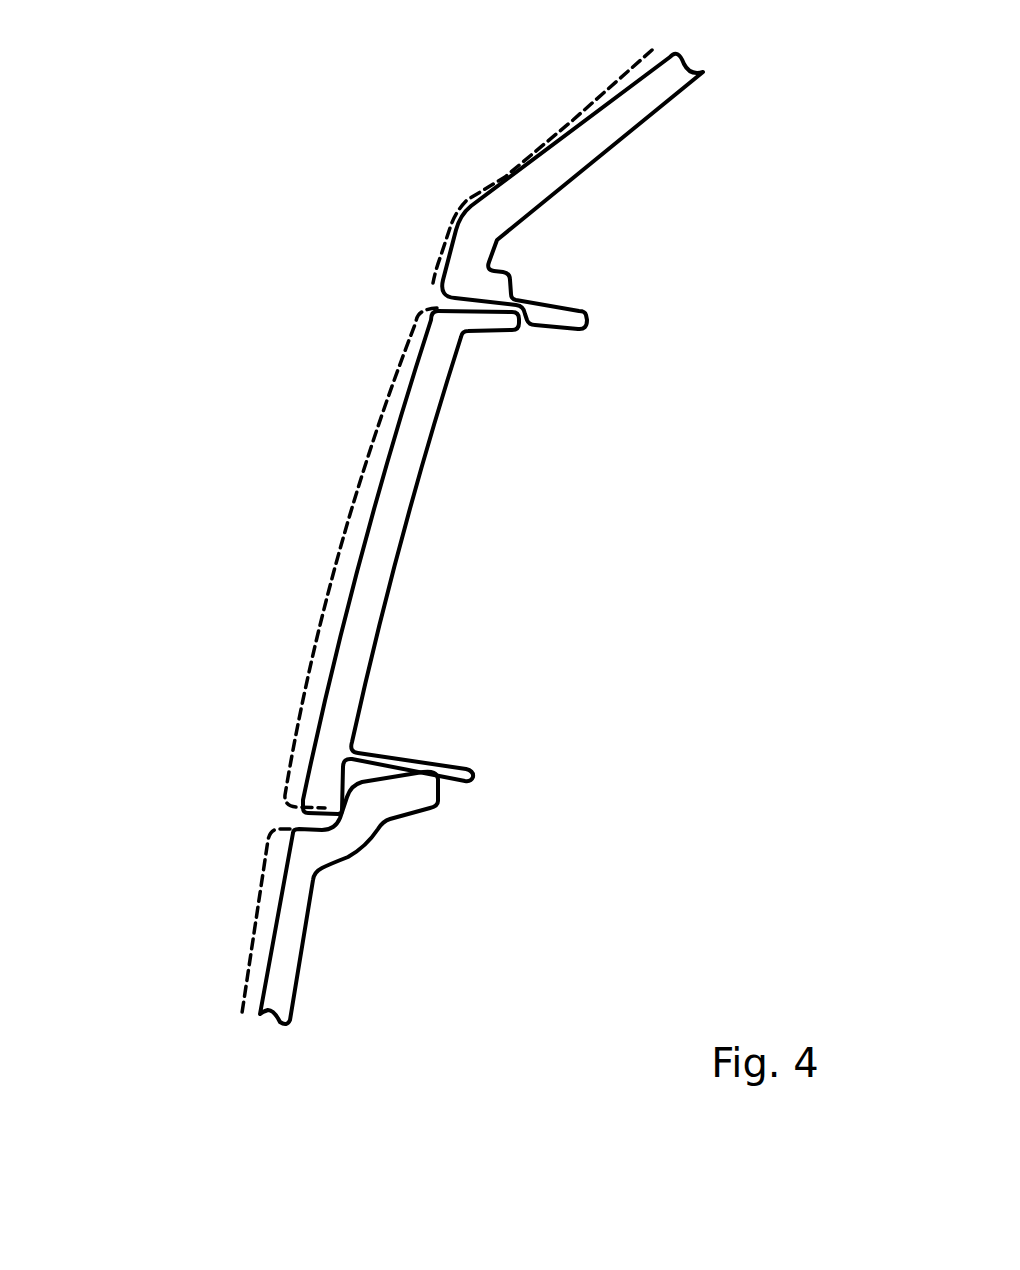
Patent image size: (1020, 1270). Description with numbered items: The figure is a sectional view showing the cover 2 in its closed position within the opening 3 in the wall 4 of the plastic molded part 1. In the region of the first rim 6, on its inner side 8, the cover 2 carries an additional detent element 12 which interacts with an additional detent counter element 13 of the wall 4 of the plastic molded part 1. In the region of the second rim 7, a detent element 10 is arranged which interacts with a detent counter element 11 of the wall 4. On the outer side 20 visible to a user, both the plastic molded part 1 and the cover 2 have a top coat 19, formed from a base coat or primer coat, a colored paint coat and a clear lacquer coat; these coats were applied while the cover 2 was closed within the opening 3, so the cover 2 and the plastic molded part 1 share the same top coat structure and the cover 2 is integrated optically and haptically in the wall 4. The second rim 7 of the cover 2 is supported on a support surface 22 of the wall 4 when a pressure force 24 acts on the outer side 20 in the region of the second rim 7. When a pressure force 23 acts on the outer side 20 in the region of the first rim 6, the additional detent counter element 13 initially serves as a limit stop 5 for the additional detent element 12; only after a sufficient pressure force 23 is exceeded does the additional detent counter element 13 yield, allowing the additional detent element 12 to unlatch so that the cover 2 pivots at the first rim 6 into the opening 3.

The plastic molded part 1 is at (522, 108).
The cover 2 is at (395, 513).
The opening 3 is at (513, 453).
The wall 4 is at (603, 137).
The limit stop 5 is at (527, 327).
The first rim 6 is at (487, 370).
The second rim 7 is at (354, 784).
The inner side 8 is at (375, 694).
The detent element 10 is at (456, 772).
The detent counter element 11 is at (398, 793).
The additional detent element 12 is at (500, 323).
The additional detent counter element 13 is at (563, 317).
The top coat 19 is at (505, 177).
The outer side 20 is at (262, 658).
The support surface 22 is at (338, 811).
The pressure force 23 is at (260, 323).
The pressure force 24 is at (254, 762).